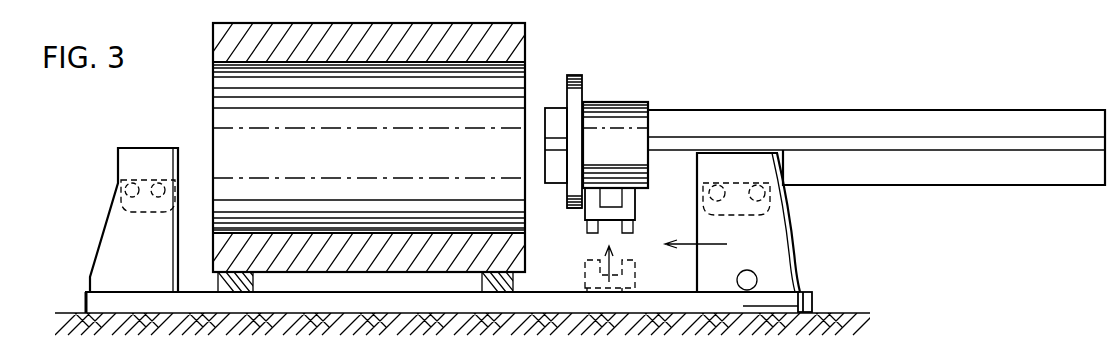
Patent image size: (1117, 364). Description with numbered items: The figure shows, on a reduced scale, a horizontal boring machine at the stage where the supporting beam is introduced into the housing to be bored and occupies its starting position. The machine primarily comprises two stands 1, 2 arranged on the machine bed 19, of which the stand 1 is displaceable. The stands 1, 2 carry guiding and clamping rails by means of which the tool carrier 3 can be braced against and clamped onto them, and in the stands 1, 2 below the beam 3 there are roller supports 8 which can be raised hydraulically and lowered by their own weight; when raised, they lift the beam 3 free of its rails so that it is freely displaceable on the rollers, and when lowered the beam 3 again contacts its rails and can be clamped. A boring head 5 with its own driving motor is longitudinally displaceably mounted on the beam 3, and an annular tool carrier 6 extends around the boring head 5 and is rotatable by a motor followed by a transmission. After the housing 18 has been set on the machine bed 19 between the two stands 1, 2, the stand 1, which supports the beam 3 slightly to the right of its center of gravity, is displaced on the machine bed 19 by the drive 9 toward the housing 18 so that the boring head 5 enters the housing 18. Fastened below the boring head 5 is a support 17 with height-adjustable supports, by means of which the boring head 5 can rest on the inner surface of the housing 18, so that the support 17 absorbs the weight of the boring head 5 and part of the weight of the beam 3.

The stand 1 is at (784, 246).
The stand 2 is at (105, 248).
The tool carrier 3 is at (912, 118).
The boring head 5 is at (627, 108).
The annular tool carrier 6 is at (582, 78).
The roller support 8 is at (127, 206).
The drive 9 is at (740, 278).
The support 17 is at (588, 209).
The housing 18 is at (528, 33).
The machine bed 19 is at (812, 300).